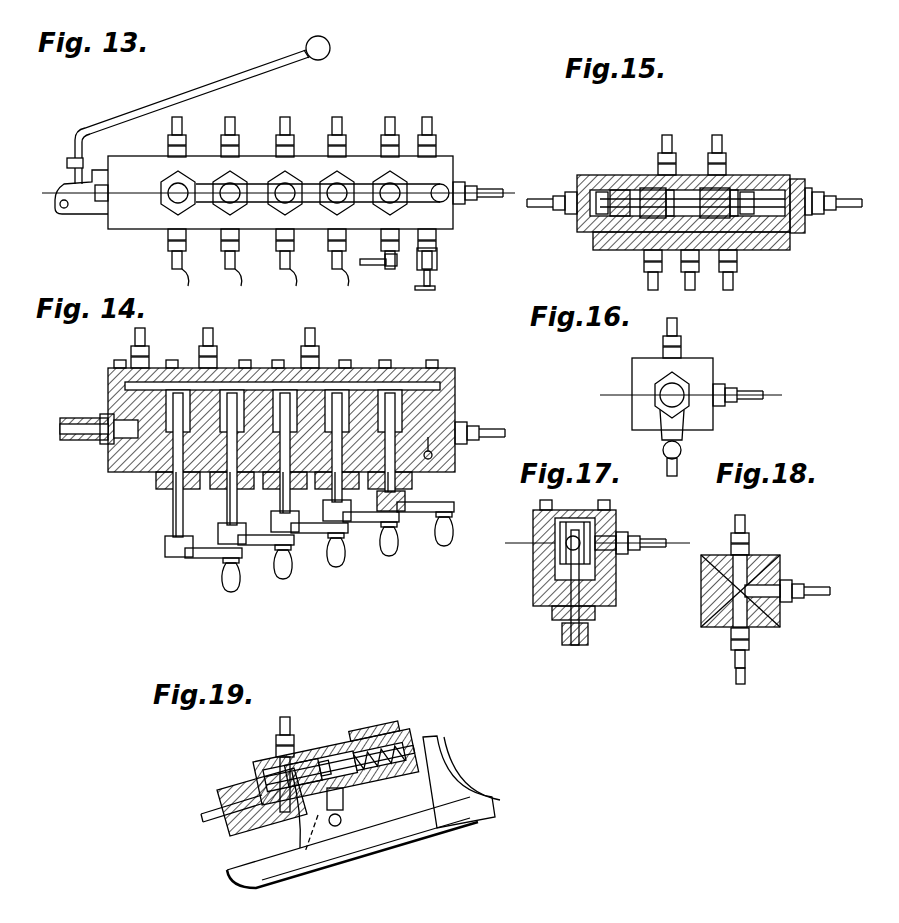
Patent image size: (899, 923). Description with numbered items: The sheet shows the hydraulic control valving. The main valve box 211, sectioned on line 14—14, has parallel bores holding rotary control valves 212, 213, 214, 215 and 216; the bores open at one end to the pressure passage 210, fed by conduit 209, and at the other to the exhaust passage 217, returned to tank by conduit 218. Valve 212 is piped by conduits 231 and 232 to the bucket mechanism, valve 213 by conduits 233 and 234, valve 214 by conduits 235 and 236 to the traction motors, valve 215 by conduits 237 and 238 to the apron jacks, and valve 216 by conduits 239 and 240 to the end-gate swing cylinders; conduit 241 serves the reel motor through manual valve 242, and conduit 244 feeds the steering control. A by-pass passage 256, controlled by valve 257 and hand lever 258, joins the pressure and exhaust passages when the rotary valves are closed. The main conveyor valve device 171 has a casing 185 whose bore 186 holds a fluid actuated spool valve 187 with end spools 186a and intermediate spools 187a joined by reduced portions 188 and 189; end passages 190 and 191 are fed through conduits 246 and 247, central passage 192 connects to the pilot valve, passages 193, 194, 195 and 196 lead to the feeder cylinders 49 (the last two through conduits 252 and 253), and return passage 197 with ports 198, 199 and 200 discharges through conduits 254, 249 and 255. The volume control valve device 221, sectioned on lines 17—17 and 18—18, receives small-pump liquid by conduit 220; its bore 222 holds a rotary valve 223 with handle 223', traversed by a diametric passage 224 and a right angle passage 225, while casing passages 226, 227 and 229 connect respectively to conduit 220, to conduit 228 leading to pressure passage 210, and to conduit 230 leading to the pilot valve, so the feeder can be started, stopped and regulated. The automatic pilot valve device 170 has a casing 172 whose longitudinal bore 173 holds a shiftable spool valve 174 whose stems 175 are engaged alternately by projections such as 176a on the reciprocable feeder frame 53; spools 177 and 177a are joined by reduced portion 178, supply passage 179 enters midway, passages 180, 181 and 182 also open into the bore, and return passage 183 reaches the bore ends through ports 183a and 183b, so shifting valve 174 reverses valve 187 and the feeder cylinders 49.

In FIG. 13, the section line 14- 14 is at (45, 191).
In FIG. 13, the manifold body 211 is at (139, 155).
In FIG. 14, the manifold body 211 is at (138, 475).
In FIG. 13, the lever pipe 258 is at (164, 104).
In FIG. 14, the lever pipe 258 is at (76, 418).
In FIG. 13, the inlet fitting 240 is at (183, 121).
In FIG. 13, the inlet fitting 238 is at (235, 117).
In FIG. 13, the inlet fitting 236 is at (290, 117).
In FIG. 13, the inlet fitting 234 is at (344, 117).
In FIG. 13, the inlet fitting 232 is at (396, 117).
In FIG. 13, the inlet fitting 228 is at (433, 124).
In FIG. 16, the inlet fitting 228 is at (666, 340).
In FIG. 18, the inlet fitting 228 is at (746, 510).
In FIG. 13, the outlet fitting 239 is at (176, 262).
In FIG. 13, the outlet fitting 237 is at (229, 262).
In FIG. 13, the outlet fitting 235 is at (284, 262).
In FIG. 13, the outlet fitting 233 is at (336, 262).
In FIG. 13, the valve 231 is at (390, 270).
In FIG. 13, the valve handle 241 is at (384, 282).
In FIG. 13, the valve 244 is at (440, 261).
In FIG. 13, the valve stem 242 is at (430, 292).
In FIG. 13, the pipe 209 is at (492, 200).
In FIG. 14, the pipe 209 is at (488, 438).
In FIG. 14, the outlet connection 210 is at (441, 432).
In FIG. 14, the connector 218 is at (135, 335).
In FIG. 14, the connector 216 is at (177, 386).
In FIG. 14, the piston unit 217 is at (233, 407).
In FIG. 14, the piston unit 215 is at (303, 385).
In FIG. 14, the piston unit 214 is at (306, 380).
In FIG. 14, the piston unit 213 is at (343, 390).
In FIG. 14, the piston unit 212 is at (404, 383).
In FIG. 14, the fitting 254 is at (311, 334).
In FIG. 15, the fitting 254 is at (660, 212).
In FIG. 14, the nipple 256 is at (108, 398).
In FIG. 14, the bore 257 is at (135, 438).
In FIG. 15, the valve body 171 is at (773, 173).
In FIG. 15, the plunger 185 is at (656, 196).
In FIG. 15, the cover plate 186 is at (600, 226).
In FIG. 15, the screws 186a is at (625, 232).
In FIG. 15, the sleeve 187 is at (745, 192).
In FIG. 15, the ports 187a is at (650, 222).
In FIG. 15, the rings 188 is at (667, 200).
In FIG. 15, the spool rod 189 is at (700, 210).
In FIG. 15, the end cap 190 is at (797, 178).
In FIG. 15, the seat 191 is at (606, 200).
In FIG. 15, the passage 192 is at (705, 188).
In FIG. 15, the bushing 193 is at (635, 184).
In FIG. 15, the passage 194 is at (735, 192).
In FIG. 15, the connection 195 is at (665, 165).
In FIG. 15, the connection 196 is at (722, 186).
In FIG. 15, the port 197 is at (686, 250).
In FIG. 15, the port 198 is at (648, 228).
In FIG. 15, the port 199 is at (705, 210).
In FIG. 15, the port 200 is at (738, 218).
In FIG. 15, the pipe 246 is at (832, 212).
In FIG. 15, the pipe 247 is at (543, 198).
In FIG. 15, the fitting 249 is at (688, 262).
In FIG. 19, the fitting 249 is at (286, 712).
In FIG. 15, the line 252 is at (671, 135).
In FIG. 15, the line 253 is at (720, 135).
In FIG. 15, the outlet 255 is at (735, 272).
In FIG. 16, the section line 17- 17 is at (612, 393).
In FIG. 17, the section line 18- 18 is at (513, 541).
In FIG. 16, the stem 220 is at (668, 470).
In FIG. 18, the stem 220 is at (737, 684).
In FIG. 16, the valve body 221 is at (716, 428).
In FIG. 17, the valve body 221 is at (531, 575).
In FIG. 18, the valve body 221 is at (765, 553).
In FIG. 17, the cylinder 222 is at (560, 556).
In FIG. 18, the cylinder 222 is at (728, 598).
In FIG. 17, the piston 223 is at (536, 587).
In FIG. 18, the piston 223 is at (694, 591).
In FIG. 16, the nut 223' is at (650, 434).
In FIG. 17, the nut 223' is at (553, 626).
In FIG. 17, the ball 224 is at (580, 540).
In FIG. 18, the ball 224 is at (735, 612).
In FIG. 17, the seat 225 is at (588, 553).
In FIG. 18, the seat 225 is at (752, 590).
In FIG. 18, the passage 226 is at (748, 628).
In FIG. 18, the port 227 is at (732, 562).
In FIG. 17, the outlet 229 is at (600, 556).
In FIG. 18, the outlet 229 is at (780, 616).
In FIG. 16, the tube 230 is at (742, 403).
In FIG. 17, the tube 230 is at (656, 547).
In FIG. 18, the tube 230 is at (822, 586).
In FIG. 19, the tube 230 is at (341, 825).
In FIG. 19, the cylinder 170 is at (256, 762).
In FIG. 19, the piston 172 is at (316, 748).
In FIG. 19, the spring 173 is at (372, 790).
In FIG. 19, the valve 174 is at (343, 808).
In FIG. 19, the tube 175 is at (203, 818).
In FIG. 19, the flange 176a is at (436, 768).
In FIG. 19, the plunger 177 is at (283, 768).
In FIG. 19, the head 177a is at (338, 760).
In FIG. 19, the rod 178 is at (310, 800).
In FIG. 19, the lever 179 is at (318, 820).
In FIG. 19, the gland 180 is at (268, 826).
In FIG. 19, the cap 181 is at (386, 740).
In FIG. 19, the pivot 182 is at (308, 856).
In FIG. 19, the passage 183 is at (306, 738).
In FIG. 19, the passage 183a is at (262, 776).
In FIG. 19, the passage 183b is at (383, 728).
In FIG. 19, the base plate 49 is at (424, 846).
In FIG. 19, the bracket 53 is at (450, 802).